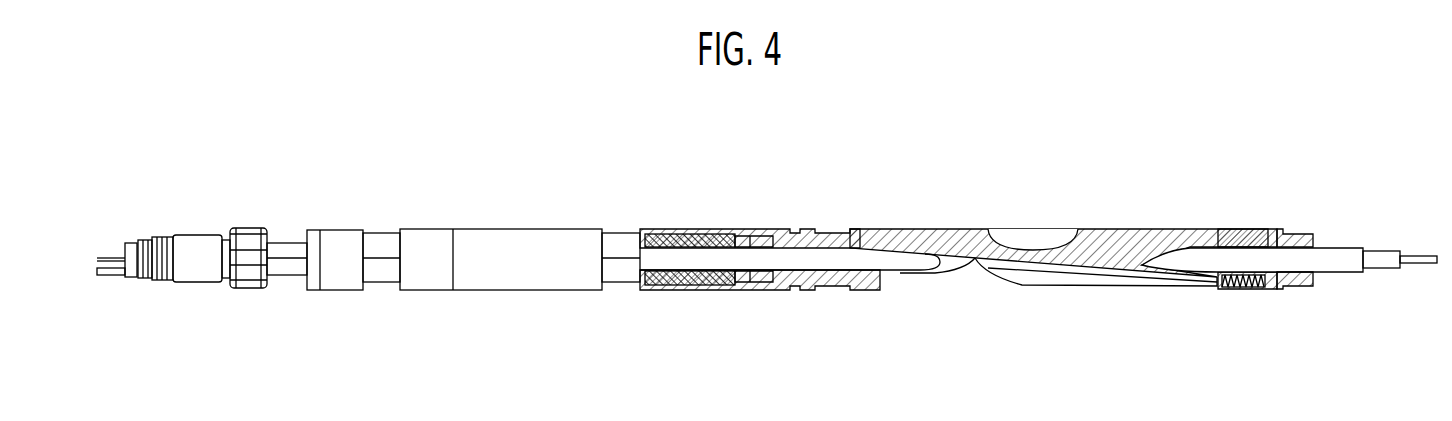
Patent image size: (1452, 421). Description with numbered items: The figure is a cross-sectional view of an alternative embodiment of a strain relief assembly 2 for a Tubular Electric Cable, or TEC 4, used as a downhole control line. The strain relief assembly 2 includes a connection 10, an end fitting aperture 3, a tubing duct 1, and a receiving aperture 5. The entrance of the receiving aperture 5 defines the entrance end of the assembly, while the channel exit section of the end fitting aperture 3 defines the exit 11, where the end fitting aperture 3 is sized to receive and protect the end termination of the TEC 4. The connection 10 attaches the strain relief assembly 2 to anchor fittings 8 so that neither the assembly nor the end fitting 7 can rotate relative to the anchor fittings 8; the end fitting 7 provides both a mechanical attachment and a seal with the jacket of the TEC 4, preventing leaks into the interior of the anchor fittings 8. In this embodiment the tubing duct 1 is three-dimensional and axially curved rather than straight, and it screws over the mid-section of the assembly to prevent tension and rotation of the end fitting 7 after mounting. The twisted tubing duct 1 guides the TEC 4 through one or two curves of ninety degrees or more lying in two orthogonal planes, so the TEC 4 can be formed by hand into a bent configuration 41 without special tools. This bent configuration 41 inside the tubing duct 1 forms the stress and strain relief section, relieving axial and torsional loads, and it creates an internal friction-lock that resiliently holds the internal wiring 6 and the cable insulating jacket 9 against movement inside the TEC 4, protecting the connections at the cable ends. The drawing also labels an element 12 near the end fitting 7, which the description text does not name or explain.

The tubing duct 1 is at (1175, 276).
The strain relief assembly 2 is at (1033, 270).
The end fitting aperture 3 is at (827, 278).
The Tubular Electric Cable (TEC) 4 is at (903, 262).
The bent configuration 41 is at (1030, 240).
The receiving aperture 5 is at (1292, 240).
The internal wiring 6 is at (1420, 259).
The end fitting 7 is at (737, 273).
The anchor fittings 8 is at (520, 250).
The cable insulating jacket 9 is at (1380, 258).
The connection 10 is at (673, 236).
The exit 11 is at (755, 236).
The spring 12 is at (1262, 276).